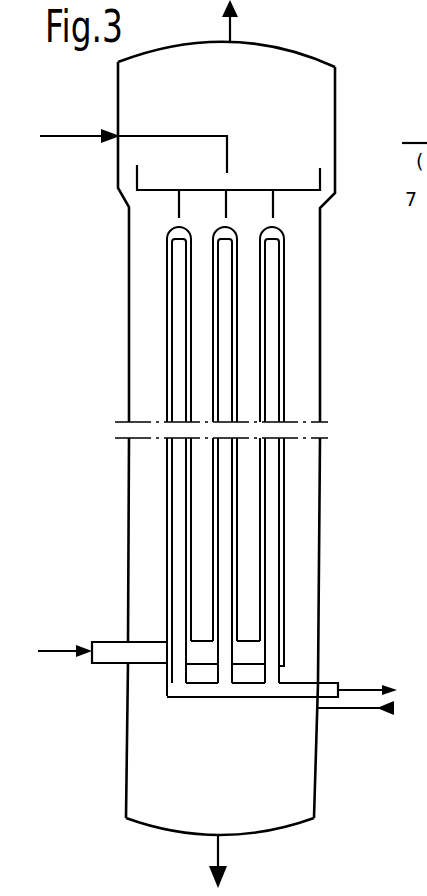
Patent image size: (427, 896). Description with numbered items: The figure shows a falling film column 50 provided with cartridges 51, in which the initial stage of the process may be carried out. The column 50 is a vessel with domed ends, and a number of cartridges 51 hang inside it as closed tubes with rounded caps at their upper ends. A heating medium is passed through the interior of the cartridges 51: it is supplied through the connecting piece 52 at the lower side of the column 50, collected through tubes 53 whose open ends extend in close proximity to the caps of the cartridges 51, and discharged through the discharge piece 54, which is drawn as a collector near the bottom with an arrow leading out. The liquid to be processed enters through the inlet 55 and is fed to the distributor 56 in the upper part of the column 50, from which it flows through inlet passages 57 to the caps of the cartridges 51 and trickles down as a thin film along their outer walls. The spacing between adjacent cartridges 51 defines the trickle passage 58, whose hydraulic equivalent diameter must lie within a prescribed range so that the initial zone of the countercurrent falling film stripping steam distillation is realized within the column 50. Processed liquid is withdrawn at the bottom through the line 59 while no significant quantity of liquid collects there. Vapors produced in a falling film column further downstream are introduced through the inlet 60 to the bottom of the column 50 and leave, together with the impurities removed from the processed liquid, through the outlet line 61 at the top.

The falling film column 50 is at (334, 350).
The cartridges 51 is at (285, 306).
The connecting piece 52 is at (99, 641).
The tubes 53 is at (176, 539).
The discharge piece 54 is at (330, 688).
The inlet 55 is at (55, 143).
The distributor 56 is at (323, 171).
The inlet passages 57 is at (273, 208).
The trickle passage 58 is at (243, 512).
The bottom outlet 59 is at (220, 850).
The inlet 60 is at (396, 708).
The outlet line 61 is at (232, 22).